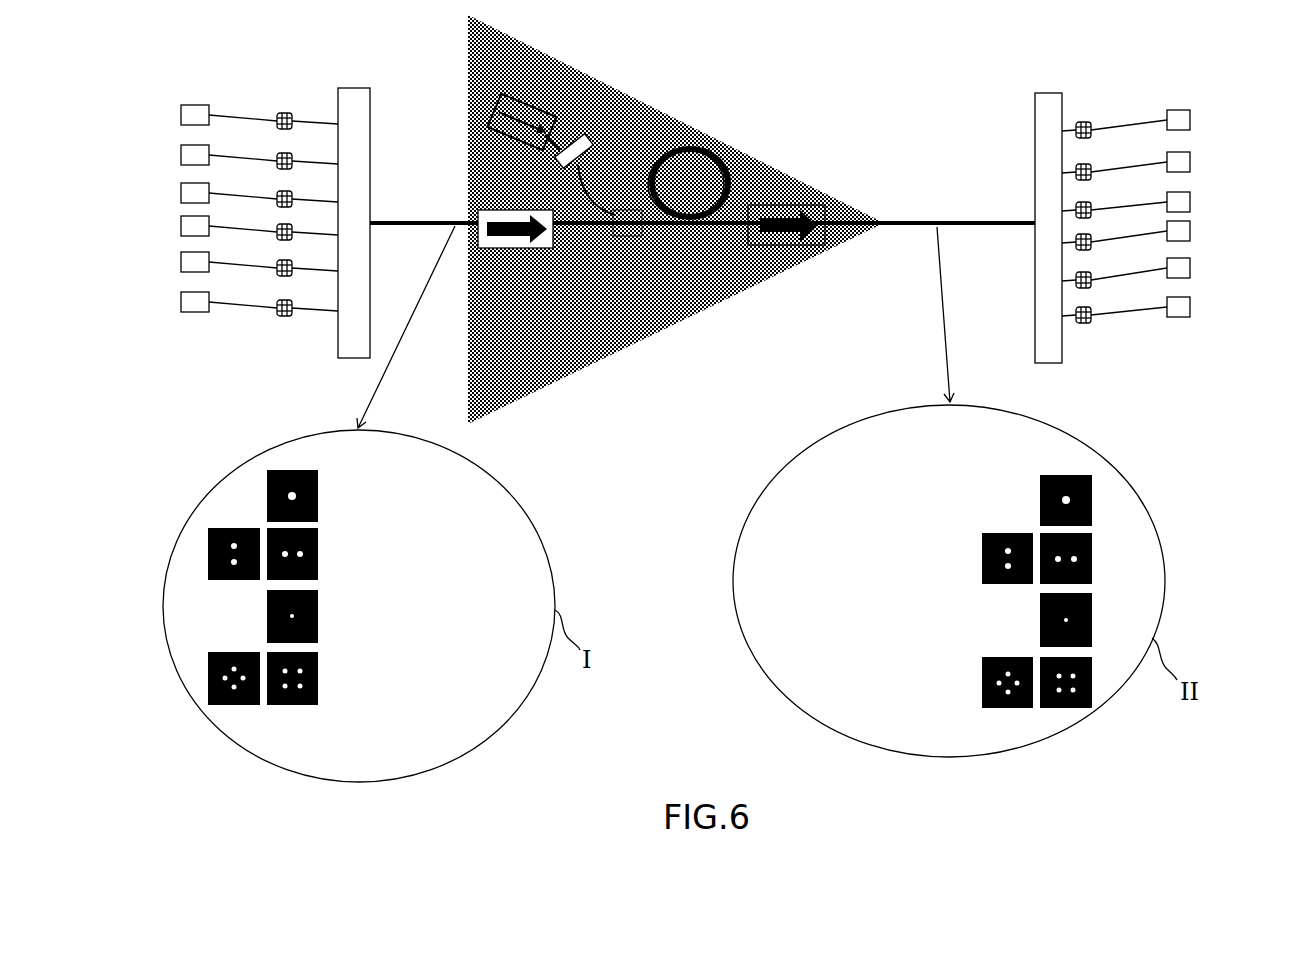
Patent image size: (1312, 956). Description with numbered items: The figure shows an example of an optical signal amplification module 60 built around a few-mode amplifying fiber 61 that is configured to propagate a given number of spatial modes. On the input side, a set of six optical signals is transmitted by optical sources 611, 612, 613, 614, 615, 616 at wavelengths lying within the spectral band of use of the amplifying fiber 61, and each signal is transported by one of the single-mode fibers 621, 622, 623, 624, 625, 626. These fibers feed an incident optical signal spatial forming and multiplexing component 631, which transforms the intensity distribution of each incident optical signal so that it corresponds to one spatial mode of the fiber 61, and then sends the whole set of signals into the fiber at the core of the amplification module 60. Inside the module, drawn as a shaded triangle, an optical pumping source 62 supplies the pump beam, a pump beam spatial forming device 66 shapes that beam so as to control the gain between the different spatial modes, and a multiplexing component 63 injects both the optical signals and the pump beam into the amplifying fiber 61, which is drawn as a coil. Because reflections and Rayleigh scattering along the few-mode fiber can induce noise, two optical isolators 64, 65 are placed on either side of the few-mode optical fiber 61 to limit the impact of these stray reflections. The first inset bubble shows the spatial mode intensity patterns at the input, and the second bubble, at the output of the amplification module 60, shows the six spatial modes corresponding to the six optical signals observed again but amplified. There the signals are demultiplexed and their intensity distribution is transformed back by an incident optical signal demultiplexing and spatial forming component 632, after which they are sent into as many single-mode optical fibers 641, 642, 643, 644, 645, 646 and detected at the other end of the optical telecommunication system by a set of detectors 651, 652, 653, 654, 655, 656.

The optical signal amplification module 60 is at (653, 103).
The few-mode amplifying fiber 61 is at (717, 146).
The optical pumping source 62 is at (497, 98).
The multiplexing component 63 is at (630, 236).
The optical isolator 64 is at (527, 248).
The optical isolator 65 is at (778, 245).
The pump beam spatial forming device 66 is at (590, 132).
The optical source 611 is at (181, 115).
The optical source 612 is at (181, 155).
The optical source 613 is at (181, 193).
The optical source 614 is at (181, 226).
The optical source 615 is at (181, 262).
The optical source 616 is at (181, 302).
The single-mode fiber 621 is at (219, 117).
The single-mode fiber 622 is at (219, 157).
The single-mode fiber 623 is at (219, 195).
The single-mode fiber 624 is at (219, 229).
The single-mode fiber 625 is at (219, 264).
The single-mode fiber 626 is at (219, 302).
The incident optical signal spatial forming and multiplexing component 631 is at (350, 88).
The incident optical signal demultiplexing and spatial forming component 632 is at (1046, 93).
The single-mode optical fiber 641 is at (1103, 120).
The single-mode optical fiber 642 is at (1103, 160).
The single-mode optical fiber 643 is at (1103, 198).
The single-mode optical fiber 644 is at (1103, 231).
The single-mode optical fiber 645 is at (1103, 266).
The single-mode optical fiber 646 is at (1103, 306).
The detector 651 is at (1190, 120).
The detector 652 is at (1190, 162).
The detector 653 is at (1190, 202).
The detector 654 is at (1190, 231).
The detector 655 is at (1190, 268).
The detector 656 is at (1190, 307).